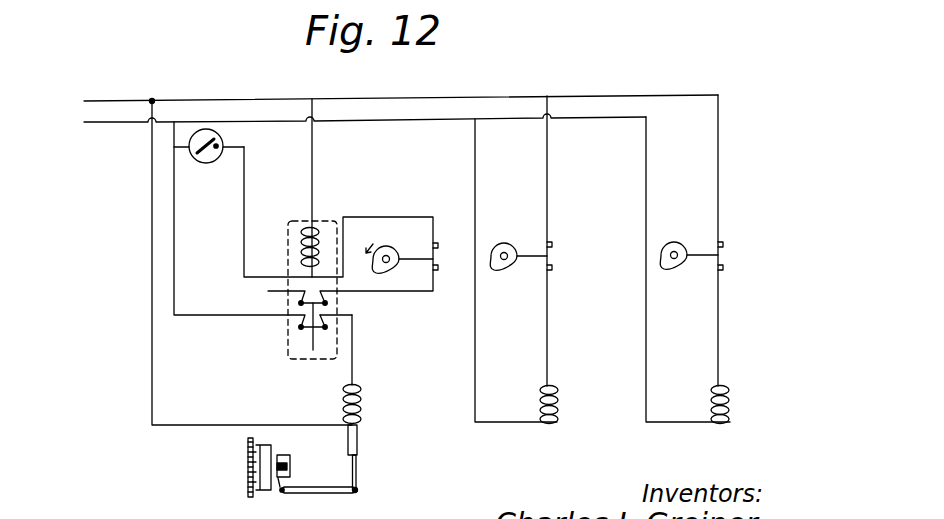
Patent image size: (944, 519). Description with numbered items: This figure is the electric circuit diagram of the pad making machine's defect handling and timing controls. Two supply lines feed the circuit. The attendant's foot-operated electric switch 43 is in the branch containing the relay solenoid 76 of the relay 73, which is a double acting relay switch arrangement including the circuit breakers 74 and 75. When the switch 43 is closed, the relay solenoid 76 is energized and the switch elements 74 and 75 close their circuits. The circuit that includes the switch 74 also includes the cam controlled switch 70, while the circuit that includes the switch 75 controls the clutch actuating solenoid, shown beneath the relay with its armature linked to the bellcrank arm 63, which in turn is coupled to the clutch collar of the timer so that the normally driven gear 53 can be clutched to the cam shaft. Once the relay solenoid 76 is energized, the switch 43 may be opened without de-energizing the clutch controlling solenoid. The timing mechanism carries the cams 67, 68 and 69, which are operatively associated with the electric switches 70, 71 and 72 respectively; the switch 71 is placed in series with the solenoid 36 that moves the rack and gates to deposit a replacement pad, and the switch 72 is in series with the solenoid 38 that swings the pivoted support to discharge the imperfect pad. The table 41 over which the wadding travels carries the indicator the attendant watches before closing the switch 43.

The electric switch 43 is at (206, 163).
The relay solenoid 76 is at (301, 246).
The relay 73 is at (288, 350).
The circuit breaker 74 is at (306, 318).
The circuit breaker 75 is at (306, 331).
The cam 67 is at (390, 247).
The electric switch 70 is at (438, 248).
The cam 68 is at (508, 244).
The electric switch 71 is at (552, 246).
The cam 69 is at (677, 243).
The electric switch 72 is at (724, 252).
The table 41 is at (363, 397).
The solenoid 36 is at (561, 396).
The solenoid 38 is at (730, 388).
The bellcrank arm 63 is at (313, 493).
The gear 53 is at (248, 490).